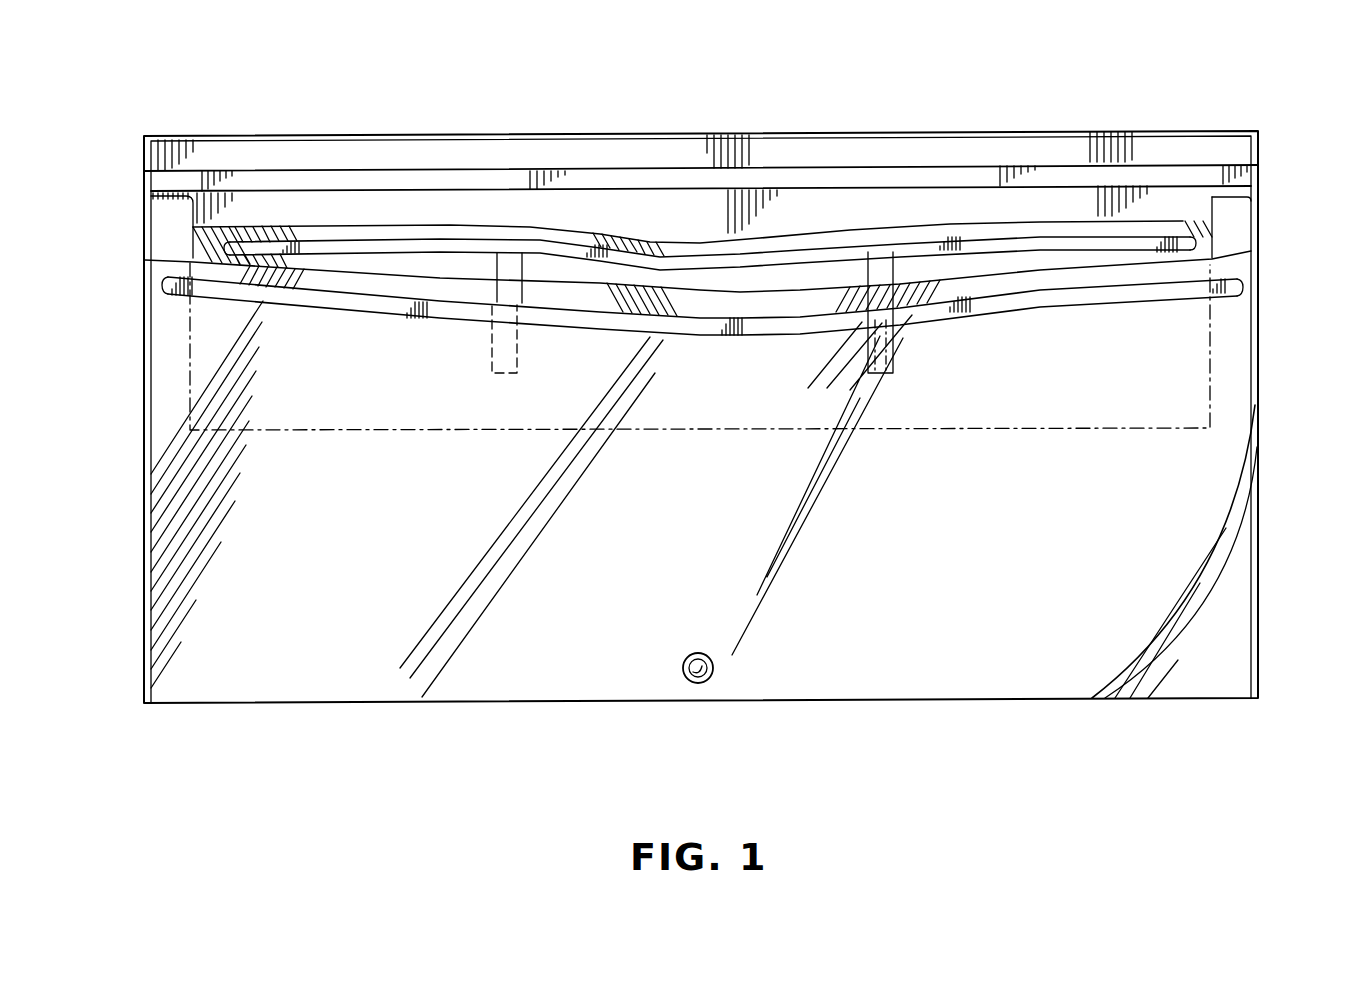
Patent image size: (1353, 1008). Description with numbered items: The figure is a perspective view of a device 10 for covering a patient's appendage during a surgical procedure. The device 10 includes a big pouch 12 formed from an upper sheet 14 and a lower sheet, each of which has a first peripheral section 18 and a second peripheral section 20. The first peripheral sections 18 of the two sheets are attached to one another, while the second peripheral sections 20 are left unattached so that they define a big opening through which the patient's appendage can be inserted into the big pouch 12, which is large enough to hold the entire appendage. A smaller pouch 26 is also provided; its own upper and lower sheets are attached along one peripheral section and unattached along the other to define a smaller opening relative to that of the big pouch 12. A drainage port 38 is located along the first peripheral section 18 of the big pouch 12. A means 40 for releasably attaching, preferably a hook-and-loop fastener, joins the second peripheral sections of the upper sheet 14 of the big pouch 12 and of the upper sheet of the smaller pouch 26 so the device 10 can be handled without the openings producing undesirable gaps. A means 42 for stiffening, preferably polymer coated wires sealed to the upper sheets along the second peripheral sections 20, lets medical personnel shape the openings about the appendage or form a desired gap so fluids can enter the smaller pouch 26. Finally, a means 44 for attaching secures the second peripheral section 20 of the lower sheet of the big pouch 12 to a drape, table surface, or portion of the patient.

The device 10 is at (850, 80).
The big pouch 12 is at (990, 597).
The upper sheet 14 is at (1155, 520).
The first peripheral section 18 is at (1259, 607).
The second peripheral section 20 is at (1214, 131).
The smaller pouch 26 is at (1168, 357).
The drainage port 38 is at (716, 668).
The means for releasably attaching 40 is at (508, 272).
The means for stiffening 42 is at (220, 292).
The means for attaching 44 is at (668, 180).